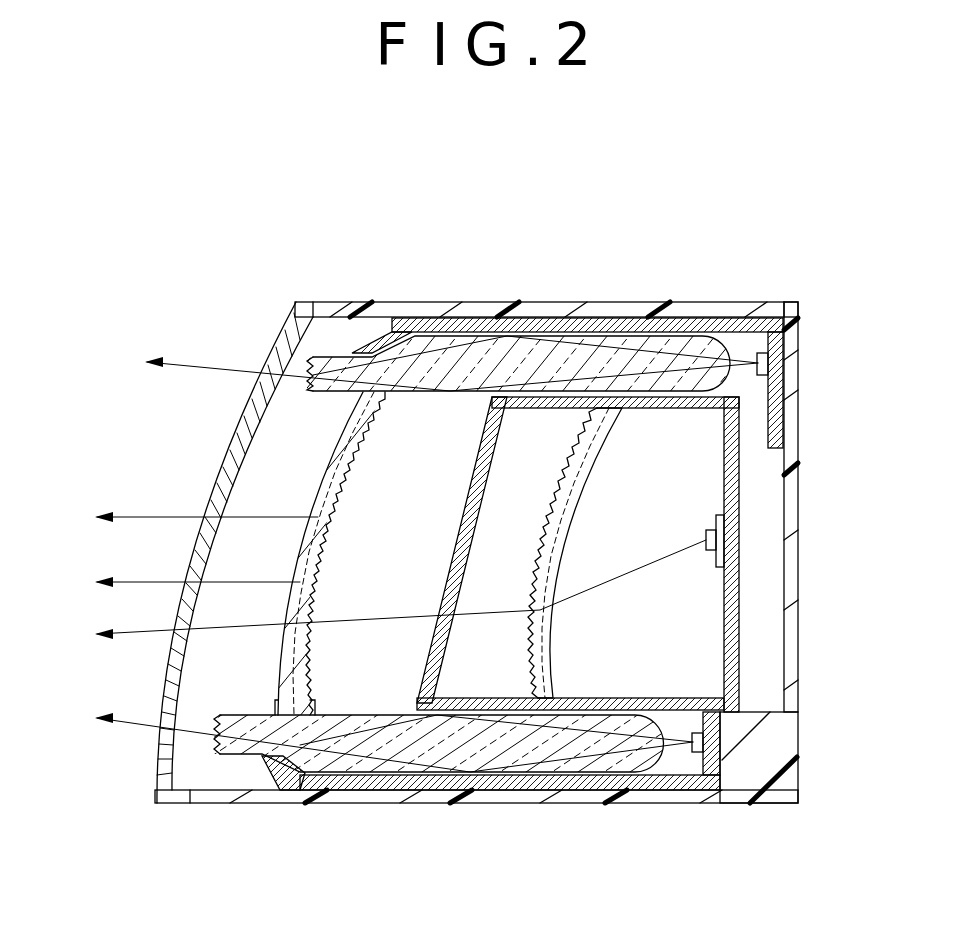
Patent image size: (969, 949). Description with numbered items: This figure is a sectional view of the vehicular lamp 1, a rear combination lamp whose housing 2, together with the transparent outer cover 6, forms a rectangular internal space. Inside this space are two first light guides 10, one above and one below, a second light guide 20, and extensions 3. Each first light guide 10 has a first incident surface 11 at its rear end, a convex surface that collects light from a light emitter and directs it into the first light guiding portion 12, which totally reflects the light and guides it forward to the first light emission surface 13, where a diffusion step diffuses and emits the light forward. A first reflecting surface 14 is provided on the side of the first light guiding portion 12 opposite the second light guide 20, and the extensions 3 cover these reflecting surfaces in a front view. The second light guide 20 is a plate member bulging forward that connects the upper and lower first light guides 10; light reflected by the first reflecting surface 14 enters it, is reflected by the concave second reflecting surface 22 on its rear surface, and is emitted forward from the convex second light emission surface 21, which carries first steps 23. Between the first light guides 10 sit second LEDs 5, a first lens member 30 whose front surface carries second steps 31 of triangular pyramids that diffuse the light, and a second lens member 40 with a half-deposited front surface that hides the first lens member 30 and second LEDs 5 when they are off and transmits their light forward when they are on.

The vehicular lamp 1 is at (620, 262).
The housing 2 is at (790, 428).
The extension 3 is at (377, 345).
The second LED 5 is at (702, 552).
The outer cover 6 is at (232, 445).
The first light guide 10 is at (470, 328).
The first incident surface 11 is at (740, 348).
The first light guiding portion 12 is at (530, 362).
The first light emission surface 13 is at (310, 370).
The first reflecting surface 14 is at (402, 334).
The second light guide 20 is at (305, 498).
The second light emission surface 21 is at (293, 567).
The second reflecting surface 22 is at (310, 595).
The first steps 23 is at (332, 462).
The first lens member 30 is at (583, 488).
The second steps 31 is at (537, 555).
The second lens member 40 is at (468, 502).